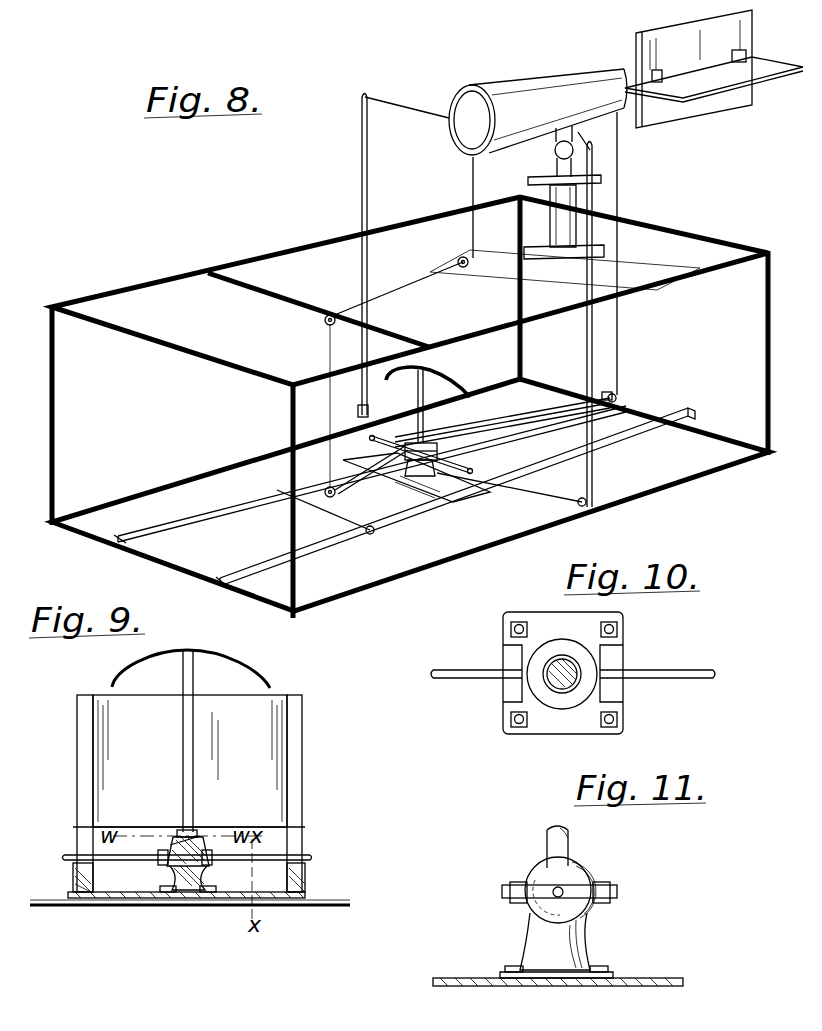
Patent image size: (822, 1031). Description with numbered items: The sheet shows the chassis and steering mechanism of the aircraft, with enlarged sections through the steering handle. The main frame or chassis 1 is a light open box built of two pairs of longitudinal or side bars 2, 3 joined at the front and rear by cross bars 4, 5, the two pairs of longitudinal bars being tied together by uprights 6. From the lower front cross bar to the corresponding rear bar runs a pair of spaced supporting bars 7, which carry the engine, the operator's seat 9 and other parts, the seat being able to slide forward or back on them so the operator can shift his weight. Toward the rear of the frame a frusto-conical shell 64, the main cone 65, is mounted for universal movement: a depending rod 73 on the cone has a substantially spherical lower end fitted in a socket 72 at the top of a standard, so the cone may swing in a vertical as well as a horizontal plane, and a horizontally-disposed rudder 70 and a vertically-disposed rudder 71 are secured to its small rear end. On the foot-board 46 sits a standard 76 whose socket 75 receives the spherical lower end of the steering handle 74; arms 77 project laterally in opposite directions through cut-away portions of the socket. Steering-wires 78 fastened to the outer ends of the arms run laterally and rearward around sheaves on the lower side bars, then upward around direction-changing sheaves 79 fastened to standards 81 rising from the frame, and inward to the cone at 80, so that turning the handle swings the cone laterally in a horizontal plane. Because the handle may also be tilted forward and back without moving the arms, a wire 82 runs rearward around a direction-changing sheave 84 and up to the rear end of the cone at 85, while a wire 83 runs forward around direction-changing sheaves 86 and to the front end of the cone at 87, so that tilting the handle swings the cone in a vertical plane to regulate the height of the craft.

In FIG. 8, the main frame or chassis 1 is at (427, 406).
In FIG. 8, the longitudinal or side bars 2 is at (283, 258).
In FIG. 8, the longitudinal or side bars 3 is at (196, 478).
In FIG. 8, the front cross bar 4 is at (228, 360).
In FIG. 8, the rear cross bar 5 is at (121, 546).
In FIG. 9, the rear cross bar 5 is at (318, 904).
In FIG. 8, the uprights 6 is at (57, 401).
In FIG. 8, the supporting bars 7 is at (213, 522).
In FIG. 9, the supporting bars 7 is at (95, 874).
In FIG. 9, the operator's seat 9 is at (190, 761).
In FIG. 8, the foot-board 46 is at (398, 489).
In FIG. 9, the foot-board 46 is at (222, 900).
In FIG. 11, the foot-board 46 is at (607, 988).
In FIG. 8, the frusto-conical shell 64 is at (538, 103).
In FIG. 8, the main cone 65 is at (568, 84).
In FIG. 8, the horizontally-disposed rudder 70 is at (796, 63).
In FIG. 8, the vertically-disposed rudder 71 is at (748, 42).
In FIG. 8, the socket 72 is at (547, 192).
In FIG. 8, the depending rod 73 is at (556, 155).
In FIG. 8, the steering handle 74 is at (440, 385).
In FIG. 9, the steering handle 74 is at (182, 726).
In FIG. 10, the steering handle 74 is at (548, 668).
In FIG. 11, the steering handle 74 is at (570, 846).
In FIG. 8, the socket 75 is at (440, 452).
In FIG. 9, the socket 75 is at (172, 863).
In FIG. 10, the socket 75 is at (577, 656).
In FIG. 11, the socket 75 is at (587, 877).
In FIG. 8, the standard 76 is at (408, 475).
In FIG. 9, the standard 76 is at (208, 874).
In FIG. 10, the standard 76 is at (612, 696).
In FIG. 11, the standard 76 is at (556, 945).
In FIG. 8, the arms 77 is at (378, 439).
In FIG. 9, the arms 77 is at (64, 856).
In FIG. 10, the arms 77 is at (470, 679).
In FIG. 11, the arms 77 is at (567, 900).
In FIG. 8, the steering-wires 78 is at (376, 432).
In FIG. 8, the direction-changing sheaves 79 is at (371, 97).
In FIG. 8, the connection of steering-wires to main cone 80 is at (494, 125).
In FIG. 8, the standards 81 is at (370, 181).
In FIG. 8, the wire 82 is at (560, 416).
In FIG. 9, the wire 82 is at (195, 830).
In FIG. 8, the wire 83 is at (360, 483).
In FIG. 9, the wire 83 is at (166, 834).
In FIG. 8, the direction-changing sheave 84 is at (614, 398).
In FIG. 8, the connection of wire to rear end of main cone 85 is at (620, 113).
In FIG. 8, the direction-changing sheaves 86 is at (458, 268).
In FIG. 8, the connection of wire to front end of main cone 87 is at (470, 160).